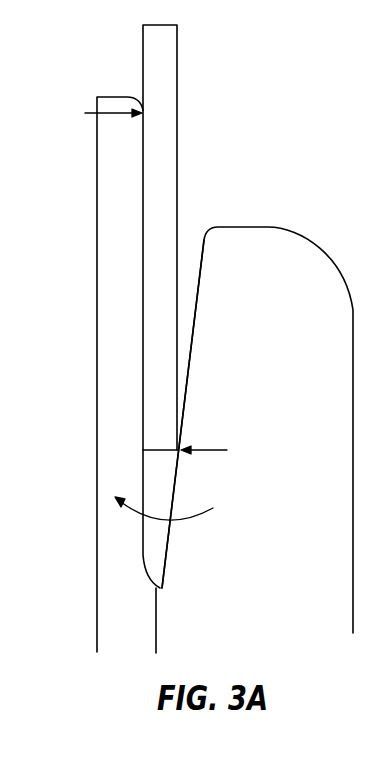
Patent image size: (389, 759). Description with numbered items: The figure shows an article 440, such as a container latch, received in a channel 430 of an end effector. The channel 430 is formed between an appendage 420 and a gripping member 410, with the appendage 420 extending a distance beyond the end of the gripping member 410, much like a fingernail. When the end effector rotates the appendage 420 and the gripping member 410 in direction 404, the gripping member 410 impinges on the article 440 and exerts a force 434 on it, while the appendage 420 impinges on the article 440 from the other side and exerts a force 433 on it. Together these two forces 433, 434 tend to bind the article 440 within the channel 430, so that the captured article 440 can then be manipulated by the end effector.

The direction of rotation 404 is at (178, 520).
The gripping member 410 is at (313, 240).
The appendage 420 is at (97, 243).
The channel 430 is at (192, 240).
The force 433 is at (112, 114).
The force 434 is at (207, 447).
The article 440 is at (177, 87).